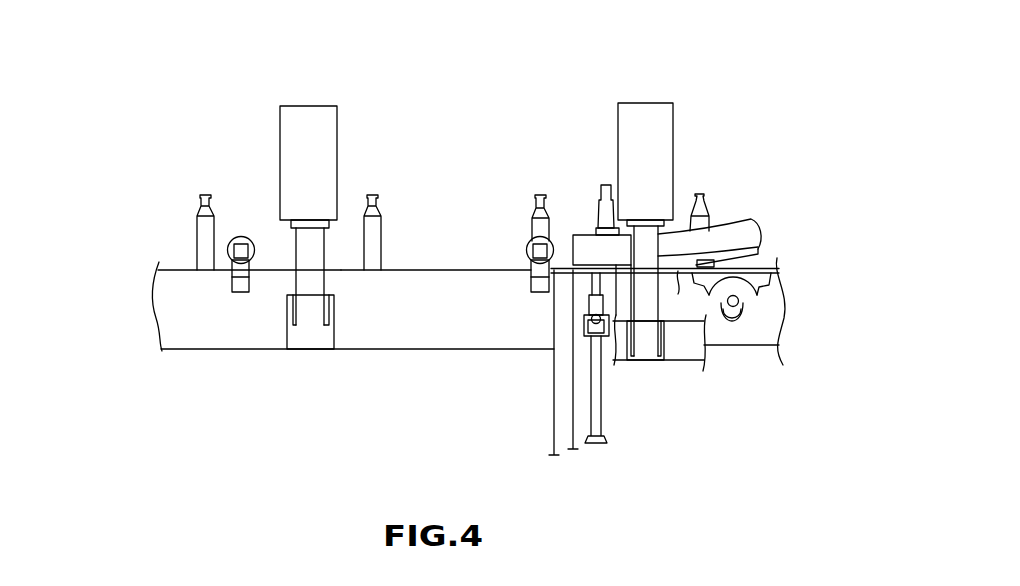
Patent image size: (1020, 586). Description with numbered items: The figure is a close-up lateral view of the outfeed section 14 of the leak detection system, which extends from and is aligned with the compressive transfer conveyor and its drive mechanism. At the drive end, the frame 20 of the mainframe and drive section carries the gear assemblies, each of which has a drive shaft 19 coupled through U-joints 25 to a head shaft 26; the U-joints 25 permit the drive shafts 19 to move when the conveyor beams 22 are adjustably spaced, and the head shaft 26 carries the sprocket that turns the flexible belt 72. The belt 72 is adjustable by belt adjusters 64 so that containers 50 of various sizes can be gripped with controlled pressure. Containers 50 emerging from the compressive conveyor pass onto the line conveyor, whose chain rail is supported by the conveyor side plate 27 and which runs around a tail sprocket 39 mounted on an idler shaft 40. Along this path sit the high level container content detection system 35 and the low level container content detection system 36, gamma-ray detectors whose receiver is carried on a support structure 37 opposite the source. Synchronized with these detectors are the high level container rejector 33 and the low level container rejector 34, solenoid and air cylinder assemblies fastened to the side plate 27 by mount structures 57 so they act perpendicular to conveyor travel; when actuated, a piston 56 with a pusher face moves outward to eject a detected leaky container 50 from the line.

The outfeed section 14 is at (120, 144).
The drive shaft 19 is at (582, 381).
The frame 20 is at (550, 446).
The beam 22 is at (727, 218).
The U-joint 25 is at (584, 335).
The head shaft 26 is at (590, 282).
The conveyor side plate 27 is at (197, 337).
The high level container rejector 33 is at (516, 286).
The low level container rejector 34 is at (216, 282).
The high level container content detection system 35 is at (631, 81).
The low level container content detection system 36 is at (296, 83).
The support structure 37 is at (307, 327).
The tail sprocket 39 is at (783, 282).
The idler shaft 40 is at (740, 300).
The container 50 is at (195, 245).
The piston 56 is at (240, 234).
The mount structure 57 is at (253, 262).
The belt adjuster 64 is at (586, 162).
The belt 72 is at (752, 218).